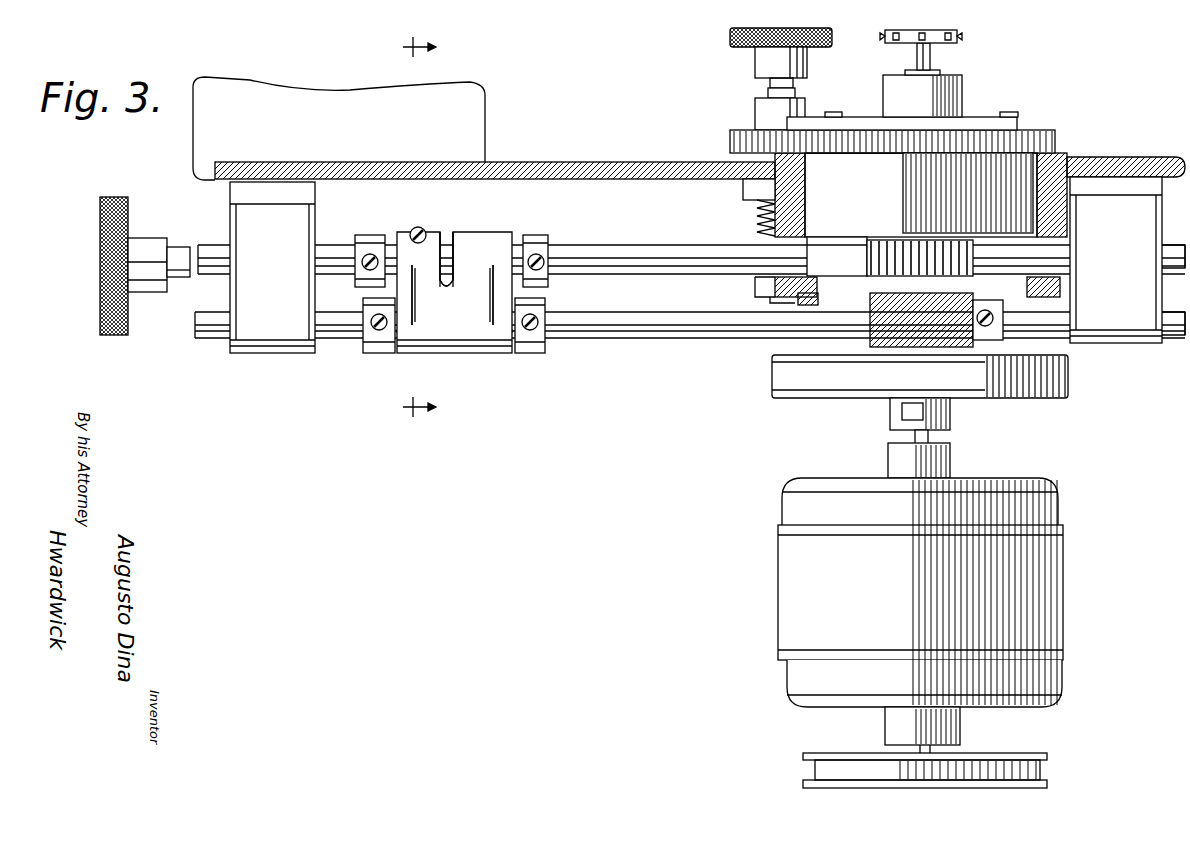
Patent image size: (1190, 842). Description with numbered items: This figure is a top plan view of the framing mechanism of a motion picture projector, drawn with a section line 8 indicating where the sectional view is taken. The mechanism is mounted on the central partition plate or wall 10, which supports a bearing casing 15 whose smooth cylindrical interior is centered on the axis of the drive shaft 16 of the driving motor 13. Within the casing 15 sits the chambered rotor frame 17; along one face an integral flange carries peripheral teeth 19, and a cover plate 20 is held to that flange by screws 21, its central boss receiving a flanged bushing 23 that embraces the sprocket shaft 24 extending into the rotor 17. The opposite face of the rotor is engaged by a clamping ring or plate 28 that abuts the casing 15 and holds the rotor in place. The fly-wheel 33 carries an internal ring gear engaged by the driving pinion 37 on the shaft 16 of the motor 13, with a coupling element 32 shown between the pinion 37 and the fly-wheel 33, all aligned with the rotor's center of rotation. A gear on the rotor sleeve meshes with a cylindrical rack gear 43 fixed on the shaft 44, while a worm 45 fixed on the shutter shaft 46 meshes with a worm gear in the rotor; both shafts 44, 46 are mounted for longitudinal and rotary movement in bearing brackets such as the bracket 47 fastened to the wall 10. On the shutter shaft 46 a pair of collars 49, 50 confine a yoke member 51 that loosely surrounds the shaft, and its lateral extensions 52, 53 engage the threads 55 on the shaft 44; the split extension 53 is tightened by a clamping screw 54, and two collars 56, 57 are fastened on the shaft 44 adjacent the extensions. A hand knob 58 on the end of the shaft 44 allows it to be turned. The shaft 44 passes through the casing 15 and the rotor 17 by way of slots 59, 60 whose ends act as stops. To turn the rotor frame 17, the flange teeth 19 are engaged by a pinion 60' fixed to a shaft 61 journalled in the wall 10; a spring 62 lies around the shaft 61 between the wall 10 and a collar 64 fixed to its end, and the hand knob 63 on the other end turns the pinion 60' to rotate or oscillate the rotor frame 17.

The section line 8 is at (425, 227).
The central partition plate or wall 10 is at (585, 166).
The driving motor 13 is at (795, 588).
The bearing casing 15 is at (1065, 165).
The drive shaft 16 is at (905, 438).
The rotor frame 17 is at (921, 195).
The peripheral teeth 19 is at (858, 128).
The cover plate 20 is at (962, 88).
The screws 21 is at (838, 100).
The flanged bushing 23 is at (940, 72).
The sprocket shaft 24 is at (930, 50).
The clamping ring or plate 28 is at (805, 300).
The coupling 32 is at (950, 420).
The fly-wheel 33 is at (785, 381).
The driving pinion 37 is at (902, 412).
The cylindrical rack gear 43 is at (885, 240).
The shaft 44 is at (662, 250).
The worm 45 is at (880, 352).
The shutter shaft 46 is at (664, 316).
The bearing bracket 47 is at (1116, 260).
The collar 49 is at (378, 354).
The collar 50 is at (530, 356).
The yoke member 51 is at (450, 352).
The lateral extension 52 is at (490, 235).
The lateral extension 53 is at (447, 228).
The clamping screw 54 is at (420, 227).
The threads 55 is at (452, 236).
The collar 56 is at (540, 238).
The collar 57 is at (372, 236).
The hand knob 58 is at (118, 200).
The slot 59 is at (830, 237).
The slot 60 is at (968, 207).
The pinion 60' is at (862, 141).
The shaft 61 is at (768, 94).
The spring 62 is at (757, 226).
The hand knob 63 is at (828, 42).
The collar 64 is at (755, 285).